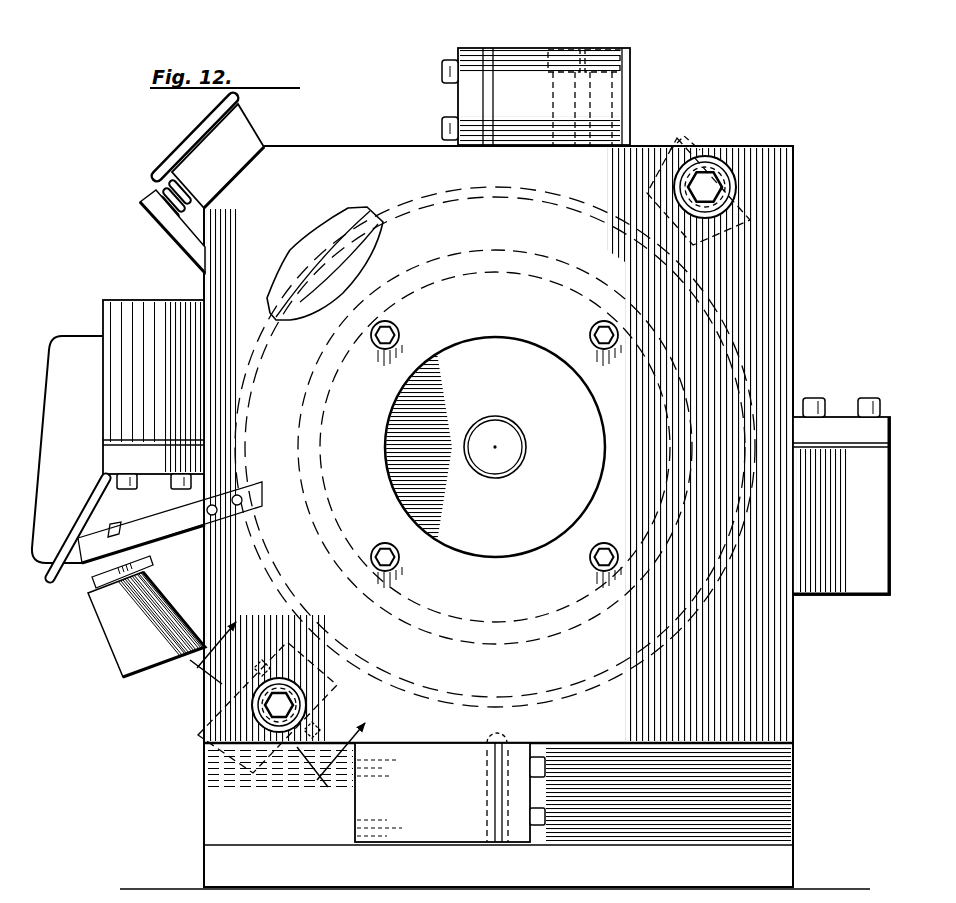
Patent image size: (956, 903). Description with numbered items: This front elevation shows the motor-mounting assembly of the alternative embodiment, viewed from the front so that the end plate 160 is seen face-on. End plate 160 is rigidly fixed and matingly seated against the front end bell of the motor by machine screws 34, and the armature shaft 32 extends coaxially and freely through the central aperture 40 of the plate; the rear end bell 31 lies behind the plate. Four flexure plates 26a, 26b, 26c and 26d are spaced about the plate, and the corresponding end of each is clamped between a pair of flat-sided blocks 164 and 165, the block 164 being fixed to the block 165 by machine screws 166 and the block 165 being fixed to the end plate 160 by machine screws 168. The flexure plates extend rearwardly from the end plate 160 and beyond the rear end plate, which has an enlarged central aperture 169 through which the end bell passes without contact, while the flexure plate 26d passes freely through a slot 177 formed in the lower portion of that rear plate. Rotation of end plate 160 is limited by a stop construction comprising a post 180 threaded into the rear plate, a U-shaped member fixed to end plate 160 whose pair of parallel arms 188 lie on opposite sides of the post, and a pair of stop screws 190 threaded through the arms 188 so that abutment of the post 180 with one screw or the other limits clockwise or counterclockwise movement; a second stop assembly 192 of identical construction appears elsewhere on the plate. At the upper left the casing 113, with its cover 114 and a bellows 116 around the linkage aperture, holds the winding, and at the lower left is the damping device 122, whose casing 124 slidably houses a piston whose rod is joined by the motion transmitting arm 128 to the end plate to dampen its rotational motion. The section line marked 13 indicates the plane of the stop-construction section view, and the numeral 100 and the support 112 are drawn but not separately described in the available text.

The tool holder assembly 100 is at (173, 144).
The support arm 112 is at (168, 238).
The casing 113 is at (220, 184).
The cover 114 is at (162, 165).
The bellows 116 is at (163, 190).
The damping device 122 is at (112, 660).
The casing 124 is at (145, 626).
The motion transmitting arm 128 is at (75, 582).
The section line 13- 13 is at (275, 713).
The end plate 160 is at (373, 182).
The block 164 is at (470, 47).
The block 165 is at (613, 47).
The machine screws 166 is at (442, 66).
The machine screws 168 is at (600, 47).
The central aperture 169 is at (302, 285).
The slot 177 is at (520, 738).
The post 180 is at (713, 182).
The arms 188 is at (198, 737).
The stop screws 190 is at (674, 137).
The second stop assembly 192 is at (690, 132).
The flexure plate 26a is at (153, 440).
The flexure plate 26b is at (490, 47).
The flexure plate 26c is at (828, 450).
The flexure plate 26d is at (497, 793).
The rear end bell 31 is at (320, 258).
The armature shaft 32 is at (524, 463).
The machine screws 34 is at (397, 328).
The aperture 40 is at (556, 355).